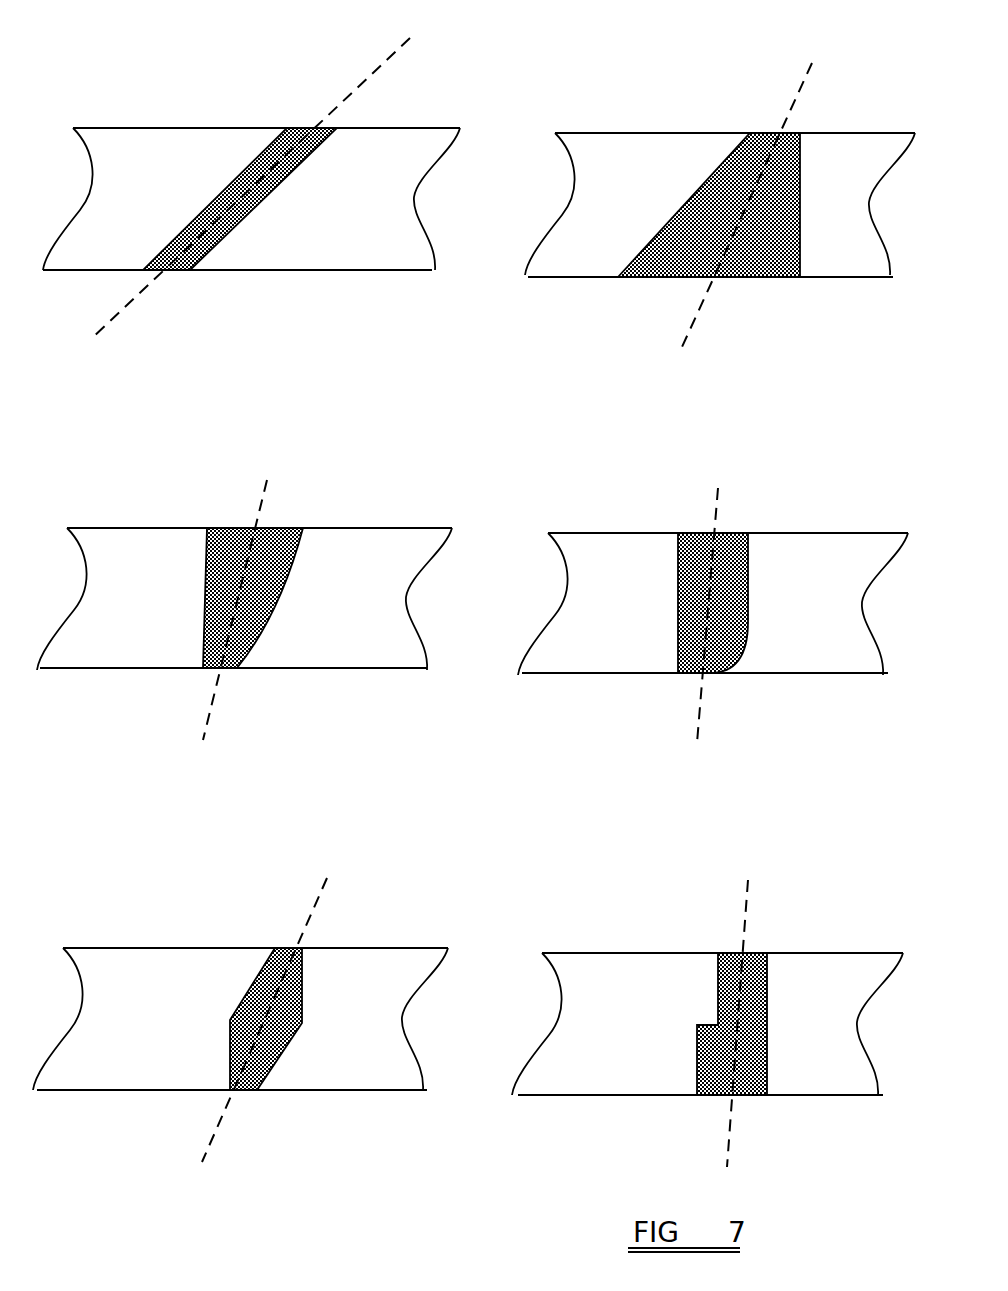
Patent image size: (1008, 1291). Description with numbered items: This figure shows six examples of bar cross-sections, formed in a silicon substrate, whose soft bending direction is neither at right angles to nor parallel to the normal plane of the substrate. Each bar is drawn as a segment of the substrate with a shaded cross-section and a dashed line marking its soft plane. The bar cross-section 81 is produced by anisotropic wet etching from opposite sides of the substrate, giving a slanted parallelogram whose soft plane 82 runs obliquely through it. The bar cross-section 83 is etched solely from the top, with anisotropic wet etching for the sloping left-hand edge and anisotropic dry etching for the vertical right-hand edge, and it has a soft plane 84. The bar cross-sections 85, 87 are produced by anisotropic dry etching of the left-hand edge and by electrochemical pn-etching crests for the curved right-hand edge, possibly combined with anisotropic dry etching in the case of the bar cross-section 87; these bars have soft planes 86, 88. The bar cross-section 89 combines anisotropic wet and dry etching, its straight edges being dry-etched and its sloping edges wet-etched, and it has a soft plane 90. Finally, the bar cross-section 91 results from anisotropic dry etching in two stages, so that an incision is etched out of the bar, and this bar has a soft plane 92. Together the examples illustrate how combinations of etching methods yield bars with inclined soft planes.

The bar cross-section 81 is at (267, 640).
The soft plane 82 is at (360, 83).
The bar cross-section 83 is at (788, 287).
The soft plane 84 is at (795, 100).
The bar cross-section 85 is at (267, 640).
The soft plane 86 is at (262, 498).
The bar cross-section 87 is at (737, 653).
The soft plane 88 is at (718, 508).
The bar cross-section 89 is at (265, 1072).
The soft plane 90 is at (313, 915).
The bar cross-section 91 is at (753, 1080).
The soft plane 92 is at (748, 925).